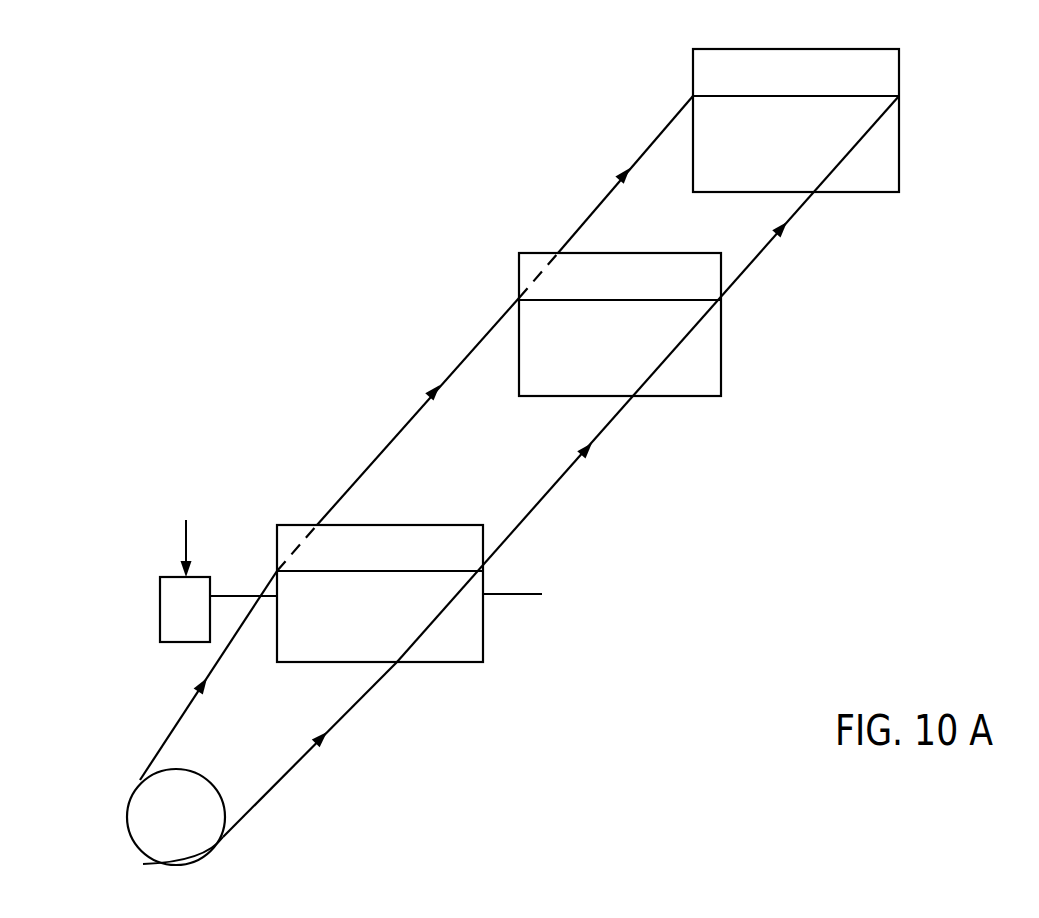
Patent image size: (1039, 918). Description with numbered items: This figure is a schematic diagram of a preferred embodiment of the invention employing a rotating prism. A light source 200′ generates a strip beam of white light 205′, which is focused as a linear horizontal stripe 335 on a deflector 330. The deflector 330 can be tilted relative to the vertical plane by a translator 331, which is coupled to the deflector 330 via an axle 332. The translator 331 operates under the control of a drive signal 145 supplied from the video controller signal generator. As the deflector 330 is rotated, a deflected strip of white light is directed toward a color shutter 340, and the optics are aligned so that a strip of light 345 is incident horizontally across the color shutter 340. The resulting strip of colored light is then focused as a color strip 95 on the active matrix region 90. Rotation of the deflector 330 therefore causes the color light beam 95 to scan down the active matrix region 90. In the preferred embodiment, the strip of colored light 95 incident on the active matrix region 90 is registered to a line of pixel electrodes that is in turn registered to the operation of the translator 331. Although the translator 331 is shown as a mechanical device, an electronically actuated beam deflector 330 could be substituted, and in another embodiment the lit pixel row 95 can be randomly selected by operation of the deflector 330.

The light source 200′ is at (200, 830).
The strip beam of white light 205′ is at (283, 775).
The deflector 330 is at (462, 662).
The linear horizontal stripe 335 is at (343, 571).
The color shutter 340 is at (700, 396).
The strip of light 345 is at (587, 299).
The active matrix region 90 is at (878, 193).
The color strip 95 is at (763, 96).
The translator 331 is at (160, 612).
The axle 332 is at (235, 593).
The drive signal 145 is at (184, 540).